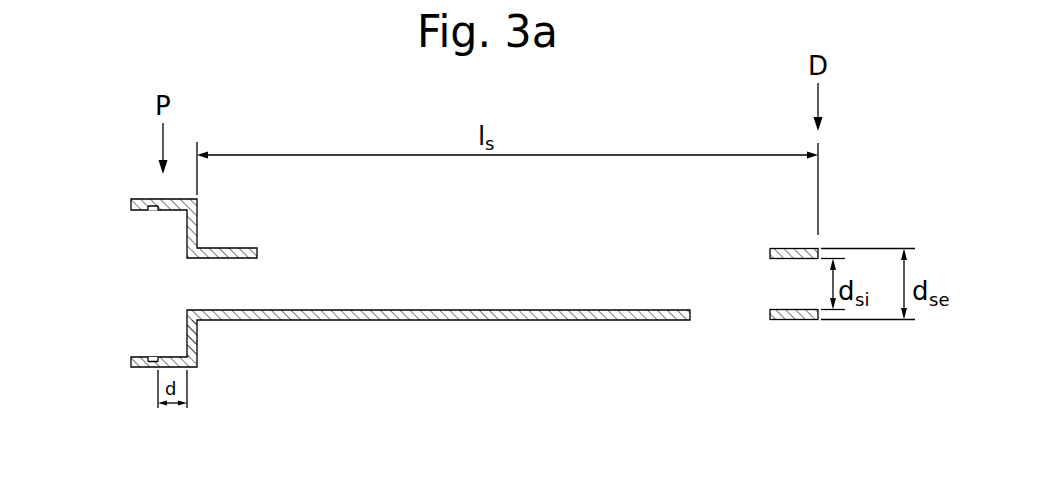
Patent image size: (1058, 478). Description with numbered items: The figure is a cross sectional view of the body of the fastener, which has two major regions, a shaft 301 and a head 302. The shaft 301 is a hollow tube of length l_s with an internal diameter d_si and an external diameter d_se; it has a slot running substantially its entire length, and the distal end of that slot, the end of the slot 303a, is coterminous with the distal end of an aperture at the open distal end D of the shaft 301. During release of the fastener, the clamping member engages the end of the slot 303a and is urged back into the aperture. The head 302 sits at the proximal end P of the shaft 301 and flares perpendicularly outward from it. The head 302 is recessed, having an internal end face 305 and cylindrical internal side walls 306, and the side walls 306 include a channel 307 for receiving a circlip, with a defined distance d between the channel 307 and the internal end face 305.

The shaft 301 is at (362, 320).
The head 302 is at (153, 199).
The end of the slot 303a is at (770, 252).
The internal end face 305 is at (187, 330).
The cylindrical internal side walls 306 is at (147, 210).
The channel 307 is at (155, 357).